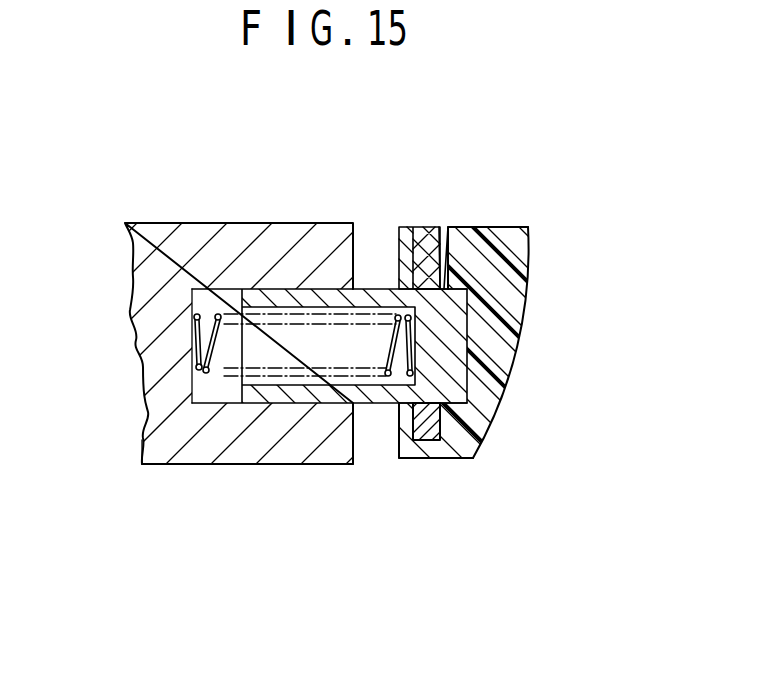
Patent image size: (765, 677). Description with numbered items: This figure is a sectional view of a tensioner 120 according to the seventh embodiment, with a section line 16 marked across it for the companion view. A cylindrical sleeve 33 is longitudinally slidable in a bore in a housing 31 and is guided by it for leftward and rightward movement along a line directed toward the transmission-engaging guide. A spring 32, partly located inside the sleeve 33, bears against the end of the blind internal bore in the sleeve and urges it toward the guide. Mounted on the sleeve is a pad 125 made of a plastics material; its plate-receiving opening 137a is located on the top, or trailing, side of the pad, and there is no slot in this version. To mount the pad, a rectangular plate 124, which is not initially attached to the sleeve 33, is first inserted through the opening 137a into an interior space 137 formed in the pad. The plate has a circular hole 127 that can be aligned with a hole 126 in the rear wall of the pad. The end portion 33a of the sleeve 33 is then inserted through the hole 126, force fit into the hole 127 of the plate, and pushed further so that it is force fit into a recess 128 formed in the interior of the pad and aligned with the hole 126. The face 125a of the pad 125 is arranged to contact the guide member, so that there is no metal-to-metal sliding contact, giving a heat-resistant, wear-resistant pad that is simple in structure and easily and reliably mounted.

The tensioner 120 is at (247, 222).
The hole 126 is at (400, 297).
The recess 128 is at (462, 330).
The rectangular plate 124 is at (432, 223).
The hole 127 is at (448, 227).
The plate-receiving opening 137a is at (442, 227).
The interior space 137 is at (455, 435).
The pad 125 is at (533, 224).
The face 125a is at (517, 370).
The end portion 33a is at (450, 423).
The cylindrical sleeve 33 is at (363, 417).
The housing 31 is at (178, 472).
The spring 32 is at (190, 380).
The section line 16 is at (380, 186).